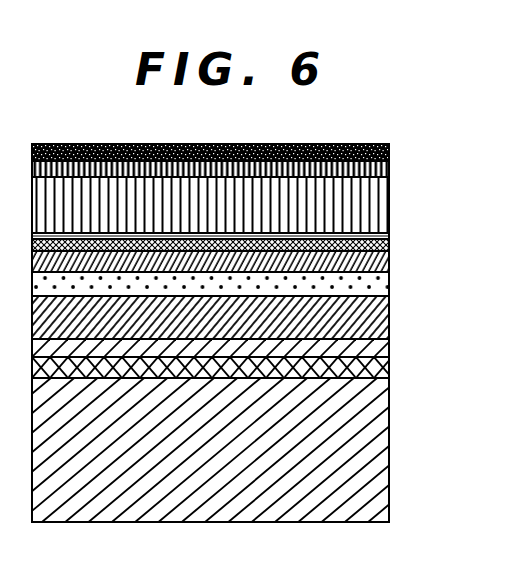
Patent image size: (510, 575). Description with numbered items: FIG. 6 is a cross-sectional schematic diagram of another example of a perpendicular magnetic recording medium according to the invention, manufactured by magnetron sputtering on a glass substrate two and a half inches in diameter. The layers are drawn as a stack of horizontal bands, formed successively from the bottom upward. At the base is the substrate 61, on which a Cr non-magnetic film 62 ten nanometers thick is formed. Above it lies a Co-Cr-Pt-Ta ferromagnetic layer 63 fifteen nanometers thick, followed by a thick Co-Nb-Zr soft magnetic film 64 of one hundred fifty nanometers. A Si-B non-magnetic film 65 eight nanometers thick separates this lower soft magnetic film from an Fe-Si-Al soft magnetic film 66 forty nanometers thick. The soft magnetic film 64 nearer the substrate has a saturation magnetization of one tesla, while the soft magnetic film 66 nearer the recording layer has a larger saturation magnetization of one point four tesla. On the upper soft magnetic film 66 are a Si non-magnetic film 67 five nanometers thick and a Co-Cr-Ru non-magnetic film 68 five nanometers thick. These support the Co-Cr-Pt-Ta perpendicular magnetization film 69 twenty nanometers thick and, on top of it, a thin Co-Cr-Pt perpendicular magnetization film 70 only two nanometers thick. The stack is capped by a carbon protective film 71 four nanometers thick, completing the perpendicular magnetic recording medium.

The substrate 61 is at (383, 433).
The non-magnetic film 62 is at (389, 368).
The ferromagnetic layer 63 is at (389, 344).
The soft magnetic film 64 is at (389, 330).
The non-magnetic film 65 is at (389, 280).
The soft magnetic film 66 is at (389, 257).
The non-magnetic film 67 is at (389, 244).
The non-magnetic film 68 is at (389, 233).
The perpendicular magnetization film 69 is at (381, 202).
The perpendicular magnetization film 70 is at (389, 165).
The protective film 71 is at (389, 150).